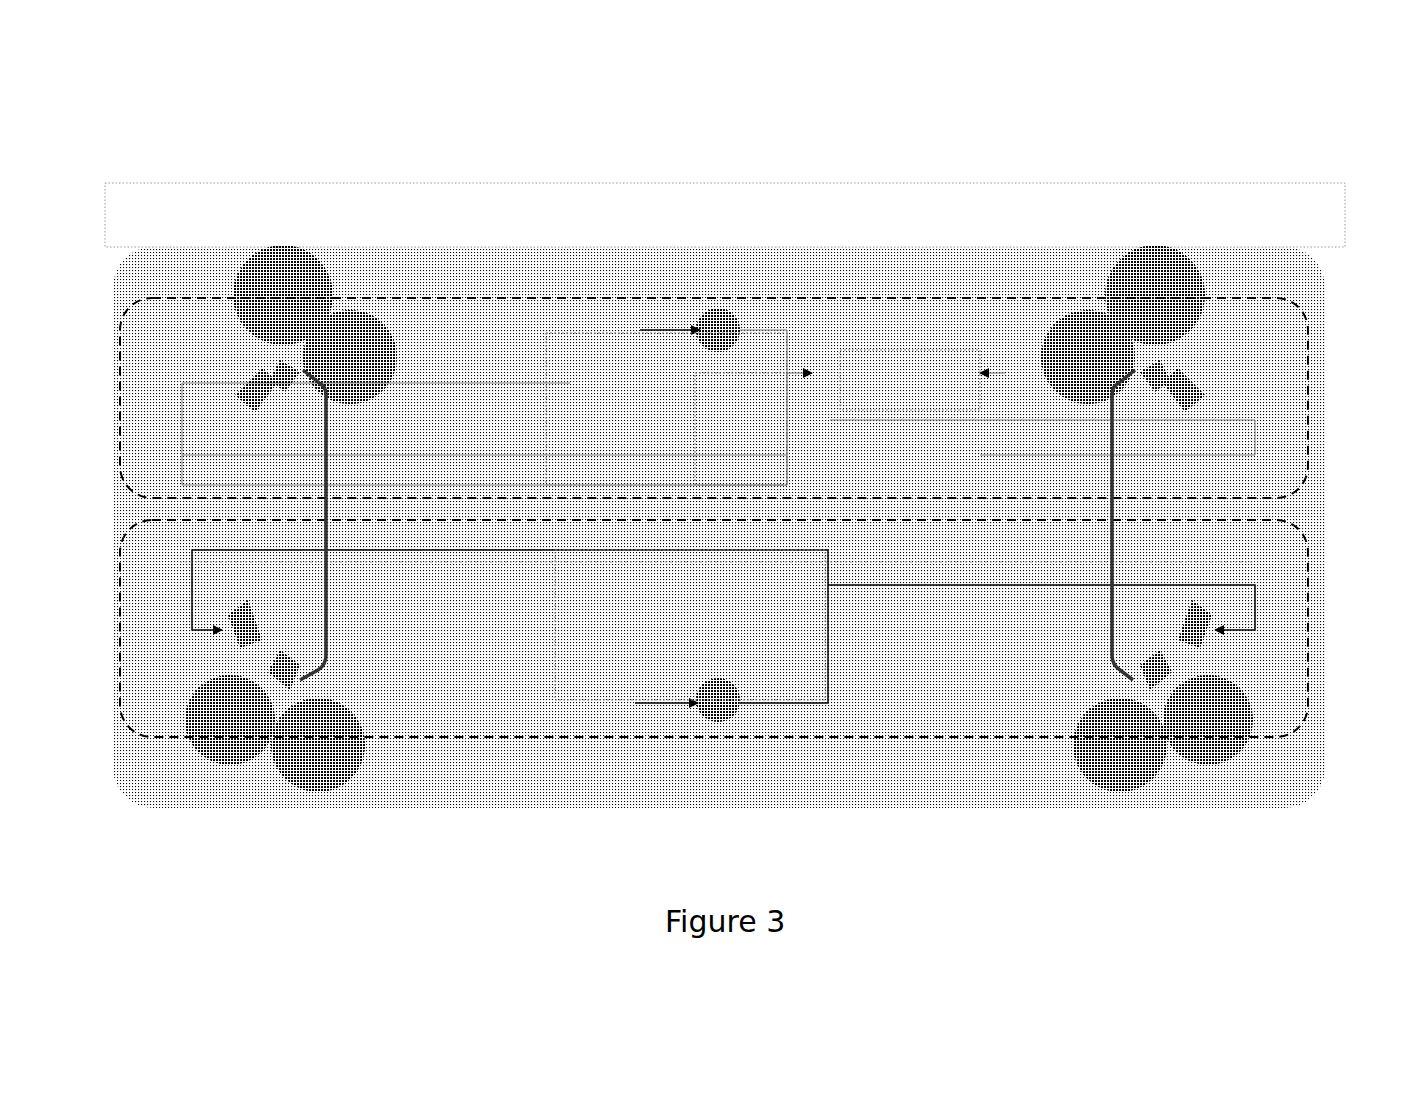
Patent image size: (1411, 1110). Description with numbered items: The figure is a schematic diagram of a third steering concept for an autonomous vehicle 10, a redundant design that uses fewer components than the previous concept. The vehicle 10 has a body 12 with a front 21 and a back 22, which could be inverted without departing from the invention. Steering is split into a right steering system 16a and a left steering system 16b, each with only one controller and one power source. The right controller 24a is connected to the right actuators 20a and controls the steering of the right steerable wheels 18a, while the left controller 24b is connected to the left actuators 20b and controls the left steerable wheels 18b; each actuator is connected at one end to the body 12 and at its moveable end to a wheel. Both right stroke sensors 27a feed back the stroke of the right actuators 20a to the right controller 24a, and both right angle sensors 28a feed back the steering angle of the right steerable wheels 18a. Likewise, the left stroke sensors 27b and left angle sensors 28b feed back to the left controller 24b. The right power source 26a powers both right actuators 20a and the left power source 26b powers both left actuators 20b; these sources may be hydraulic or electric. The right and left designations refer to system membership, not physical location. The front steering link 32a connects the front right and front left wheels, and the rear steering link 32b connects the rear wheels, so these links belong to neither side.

The autonomous vehicle 10 is at (642, 140).
The body 12 is at (720, 268).
The right steering system 16a is at (510, 297).
The left steering system 16b is at (505, 738).
The right steerable wheels 18a is at (285, 265).
The left steerable wheels 18b is at (263, 747).
The right actuators 20a is at (252, 397).
The left actuators 20b is at (238, 637).
The front 21 is at (110, 548).
The back 22 is at (1332, 476).
The right controller 24a is at (870, 353).
The left controller 24b is at (527, 680).
The right power source 26a is at (730, 312).
The left power source 26b is at (740, 720).
The right stroke sensors 27a is at (323, 390).
The left stroke sensors 27b is at (240, 637).
The right angle sensors 28a is at (278, 377).
The left angle sensors 28b is at (287, 657).
The front steering link 32a is at (323, 495).
The rear steering link 32b is at (1107, 463).